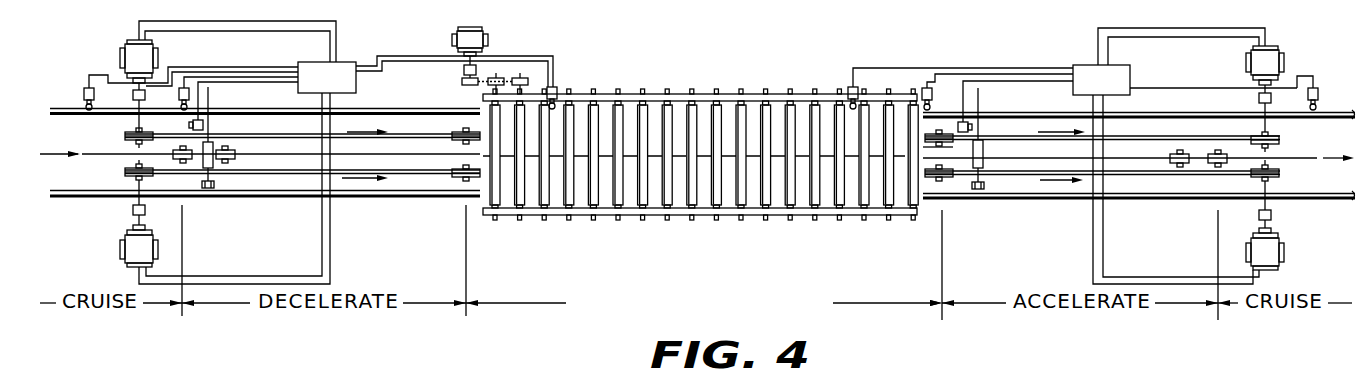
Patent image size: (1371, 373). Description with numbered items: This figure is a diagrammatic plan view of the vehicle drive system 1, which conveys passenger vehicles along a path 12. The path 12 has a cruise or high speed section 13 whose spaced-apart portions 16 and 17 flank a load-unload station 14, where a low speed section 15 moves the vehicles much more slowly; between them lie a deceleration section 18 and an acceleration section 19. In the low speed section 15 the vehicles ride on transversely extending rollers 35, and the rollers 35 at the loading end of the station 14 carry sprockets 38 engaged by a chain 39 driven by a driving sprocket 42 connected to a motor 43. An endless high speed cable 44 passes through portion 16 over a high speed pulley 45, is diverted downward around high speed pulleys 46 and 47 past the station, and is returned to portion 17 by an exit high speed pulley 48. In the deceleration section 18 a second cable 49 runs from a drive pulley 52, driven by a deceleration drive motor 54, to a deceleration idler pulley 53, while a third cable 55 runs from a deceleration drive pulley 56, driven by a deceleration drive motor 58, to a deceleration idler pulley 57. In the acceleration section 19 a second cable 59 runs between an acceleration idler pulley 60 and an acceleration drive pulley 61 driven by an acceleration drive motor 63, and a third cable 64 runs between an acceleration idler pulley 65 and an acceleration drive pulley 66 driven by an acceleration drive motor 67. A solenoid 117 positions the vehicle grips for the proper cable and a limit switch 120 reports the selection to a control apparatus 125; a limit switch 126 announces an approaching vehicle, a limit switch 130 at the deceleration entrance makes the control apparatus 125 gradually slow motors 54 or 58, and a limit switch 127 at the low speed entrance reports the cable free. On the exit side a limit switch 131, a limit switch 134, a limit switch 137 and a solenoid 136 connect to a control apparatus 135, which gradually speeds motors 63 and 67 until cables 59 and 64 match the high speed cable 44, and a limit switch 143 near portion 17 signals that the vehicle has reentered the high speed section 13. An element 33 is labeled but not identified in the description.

The vehicle drive system 1 is at (736, 78).
The path 12 is at (1335, 136).
The high speed section 13 is at (76, 182).
The load-unload station 14 is at (828, 303).
The low speed section 15 is at (680, 86).
The portion of high speed section 16 is at (63, 127).
The portion of high speed section 17 is at (1340, 202).
The deceleration section 18 is at (277, 182).
The acceleration section 19 is at (1066, 190).
The rail end 33 is at (1330, 110).
The rollers 35 is at (628, 108).
The sprockets 38 is at (520, 74).
The chain 39 is at (496, 74).
The driving sprocket 42 is at (462, 79).
The motor 43 is at (462, 30).
The high speed cable 44 is at (1292, 158).
The high speed pulley 45 is at (178, 164).
The high speed pulley 46 is at (230, 164).
The high speed pulley 47 is at (1174, 168).
The exit high speed pulley 48 is at (1214, 168).
The second cable 49 is at (274, 142).
The drive pulley 52 is at (126, 134).
The deceleration idler pulley 53 is at (458, 130).
The deceleration drive motor 54 is at (134, 40).
The third cable 55 is at (408, 176).
The deceleration drive pulley 56 is at (126, 170).
The deceleration idler pulley 57 is at (456, 178).
The deceleration drive motor 58 is at (120, 250).
The second cable 59 is at (1150, 135).
The acceleration idler pulley 60 is at (917, 150).
The acceleration drive pulley 61 is at (1278, 140).
The acceleration drive motor 63 is at (1270, 46).
The third cable 64 is at (1128, 178).
The acceleration idler pulley 65 is at (948, 178).
The acceleration drive pulley 66 is at (1252, 177).
The acceleration drive motor 67 is at (1284, 258).
The solenoid 117 is at (204, 170).
The limit switch 120 is at (204, 127).
The control apparatus 125 is at (310, 62).
The limit switch 126 is at (85, 86).
The limit switch 127 is at (560, 88).
The limit switch 130 is at (181, 86).
The limit switch 131 is at (850, 88).
The limit switch 134 is at (925, 87).
The control apparatus 135 is at (1080, 65).
The solenoid 136 is at (984, 170).
The limit switch 137 is at (963, 120).
The limit switch 143 is at (1313, 86).